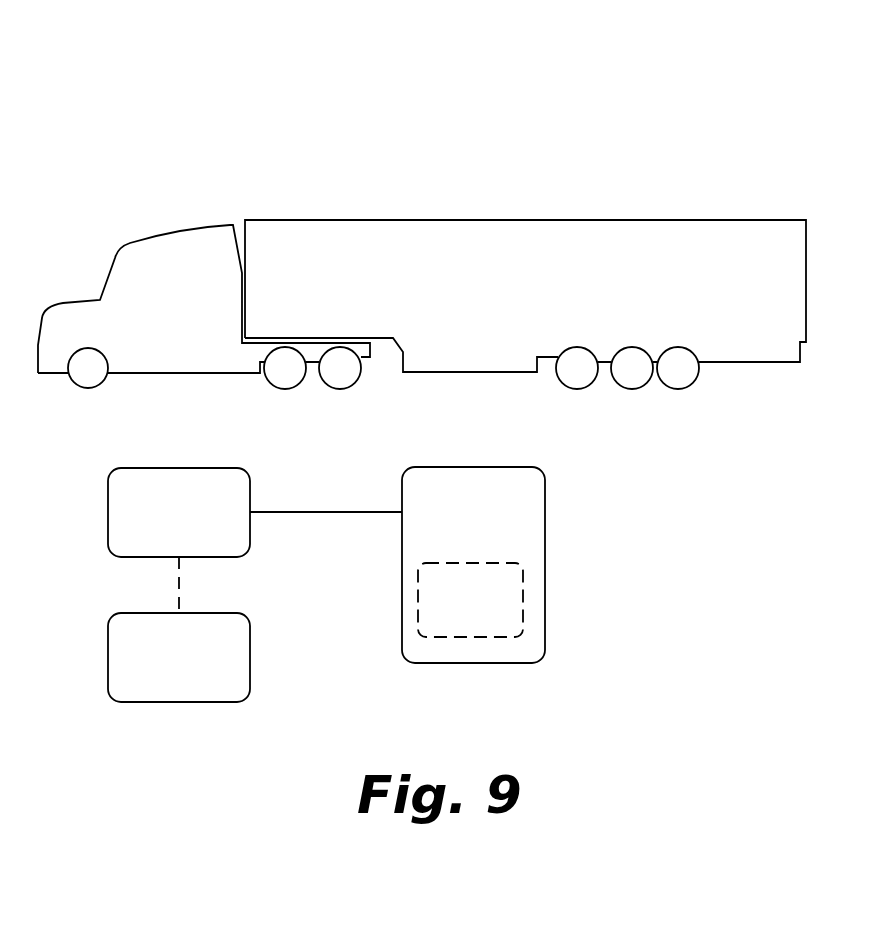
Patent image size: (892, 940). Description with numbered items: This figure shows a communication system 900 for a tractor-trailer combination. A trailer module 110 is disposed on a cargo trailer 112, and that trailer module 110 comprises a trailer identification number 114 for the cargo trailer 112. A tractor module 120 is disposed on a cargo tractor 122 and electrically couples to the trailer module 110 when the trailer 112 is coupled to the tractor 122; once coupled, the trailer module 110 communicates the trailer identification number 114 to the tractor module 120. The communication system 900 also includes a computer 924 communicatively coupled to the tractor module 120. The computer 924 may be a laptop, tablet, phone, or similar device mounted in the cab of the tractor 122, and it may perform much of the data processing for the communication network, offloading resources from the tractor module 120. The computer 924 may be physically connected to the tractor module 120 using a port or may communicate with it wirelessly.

The communication system 900 is at (320, 136).
The cargo tractor 122 is at (190, 298).
The cargo trailer 112 is at (487, 296).
The tractor module 120 is at (145, 347).
The computer 924 is at (203, 671).
The trailer module 110 is at (508, 347).
The trailer identification number 114 is at (495, 613).